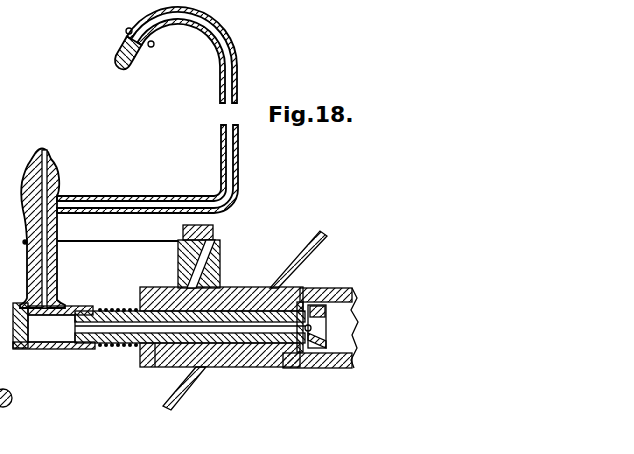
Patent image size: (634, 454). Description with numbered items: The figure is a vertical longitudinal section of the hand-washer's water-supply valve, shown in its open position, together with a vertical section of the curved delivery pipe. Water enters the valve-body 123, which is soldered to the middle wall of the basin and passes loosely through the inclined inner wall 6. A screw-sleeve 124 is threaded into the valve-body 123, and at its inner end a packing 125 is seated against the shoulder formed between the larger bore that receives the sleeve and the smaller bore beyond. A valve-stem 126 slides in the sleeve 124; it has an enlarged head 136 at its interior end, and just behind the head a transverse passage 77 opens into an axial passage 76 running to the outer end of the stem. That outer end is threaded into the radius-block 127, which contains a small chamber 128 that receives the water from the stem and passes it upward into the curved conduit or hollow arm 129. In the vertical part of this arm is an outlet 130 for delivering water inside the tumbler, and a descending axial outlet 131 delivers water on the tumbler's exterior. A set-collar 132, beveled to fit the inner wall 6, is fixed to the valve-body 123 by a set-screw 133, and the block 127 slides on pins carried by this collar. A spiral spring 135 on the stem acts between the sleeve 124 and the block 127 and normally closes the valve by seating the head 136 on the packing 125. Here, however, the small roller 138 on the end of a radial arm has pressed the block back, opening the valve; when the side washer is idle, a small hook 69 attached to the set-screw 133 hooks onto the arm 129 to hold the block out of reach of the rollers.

The inclined portion of inner wall 6 is at (312, 247).
The small hook 69 is at (100, 235).
The axial passage 76 is at (193, 327).
The transverse passage 77 is at (323, 341).
The valve-body 123 is at (323, 289).
The screw-sleeve 124 is at (150, 367).
The packing 125 is at (302, 368).
The valve-stem 126 is at (118, 349).
The radius-block 127 is at (14, 325).
The small chamber 128 is at (51, 328).
The curved conduit or hollow arm 129 is at (218, 97).
The outlet 130 is at (42, 219).
The descending axial outlet 131 is at (170, 55).
The set-collar 132 is at (160, 388).
The set-screw 133 is at (212, 231).
The spiral spring 135 is at (118, 302).
The enlarged head 136 is at (325, 313).
The small roller 138 is at (19, 398).